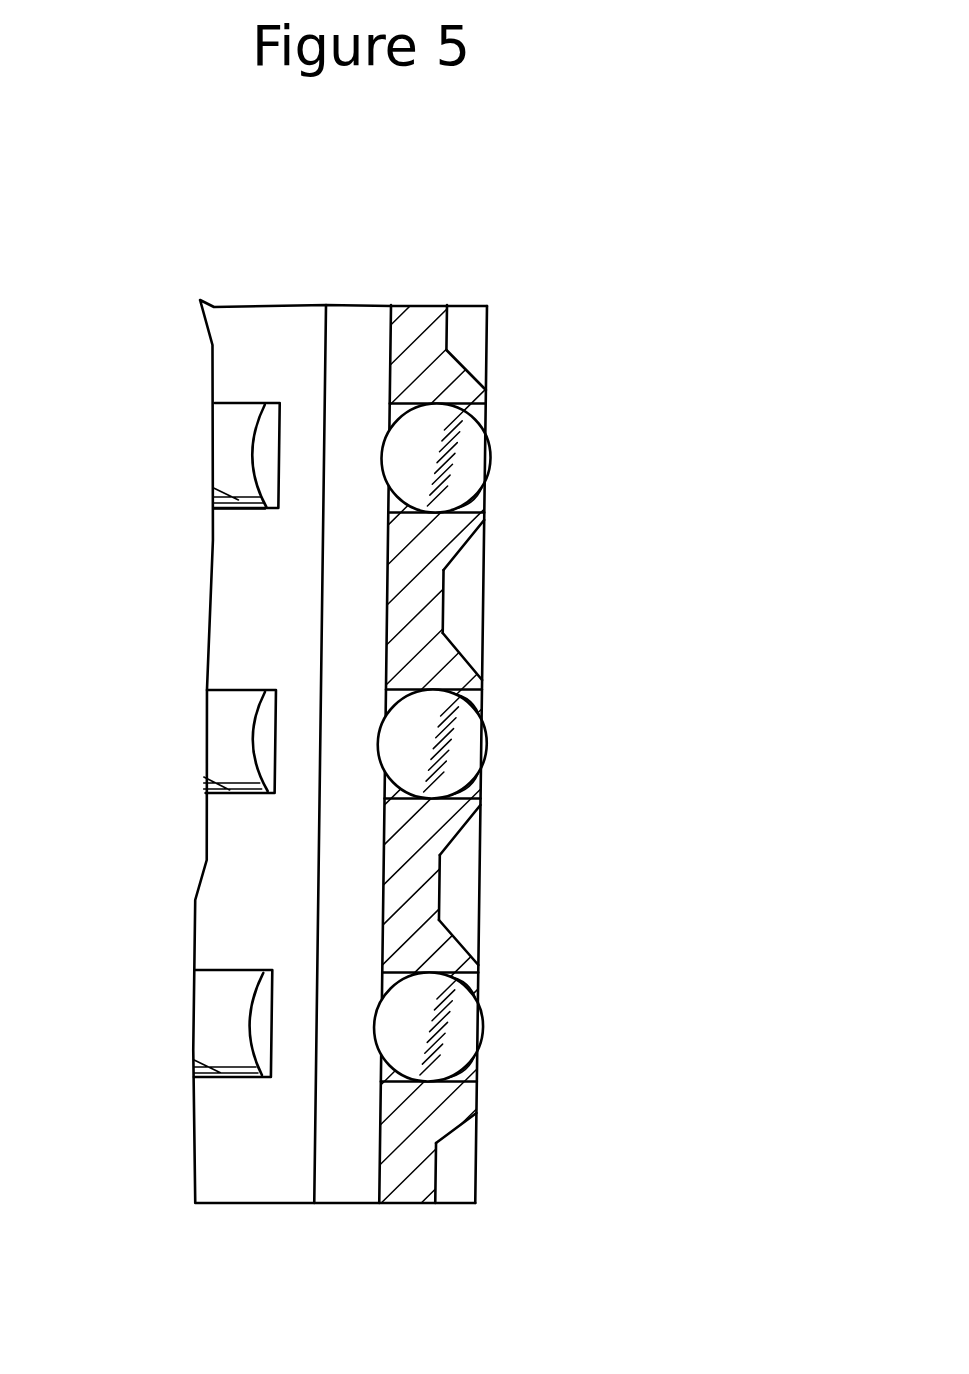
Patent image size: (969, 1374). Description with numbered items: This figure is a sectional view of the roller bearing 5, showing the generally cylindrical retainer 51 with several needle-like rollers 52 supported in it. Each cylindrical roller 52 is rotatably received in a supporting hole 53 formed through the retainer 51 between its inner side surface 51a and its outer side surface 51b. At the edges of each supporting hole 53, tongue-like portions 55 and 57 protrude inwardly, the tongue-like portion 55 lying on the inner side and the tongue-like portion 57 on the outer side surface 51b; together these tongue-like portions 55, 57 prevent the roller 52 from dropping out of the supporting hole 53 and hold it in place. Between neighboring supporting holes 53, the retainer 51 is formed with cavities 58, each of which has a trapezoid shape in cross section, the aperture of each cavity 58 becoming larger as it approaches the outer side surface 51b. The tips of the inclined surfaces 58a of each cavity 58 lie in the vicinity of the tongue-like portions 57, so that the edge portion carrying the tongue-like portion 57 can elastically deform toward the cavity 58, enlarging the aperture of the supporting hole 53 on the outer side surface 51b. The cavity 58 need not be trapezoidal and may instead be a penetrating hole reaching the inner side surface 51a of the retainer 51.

The roller bearing 5 is at (521, 281).
The retainer 51 is at (225, 345).
The inner side surface 51a is at (380, 1175).
The outer side surface 51b is at (476, 1193).
The roller 52 is at (465, 455).
The supporting hole 53 is at (487, 497).
The tongue-like portion 55 is at (392, 404).
The tongue-like portion 57 is at (487, 402).
The cavity 58 is at (465, 324).
The inclined surface 58a is at (470, 365).